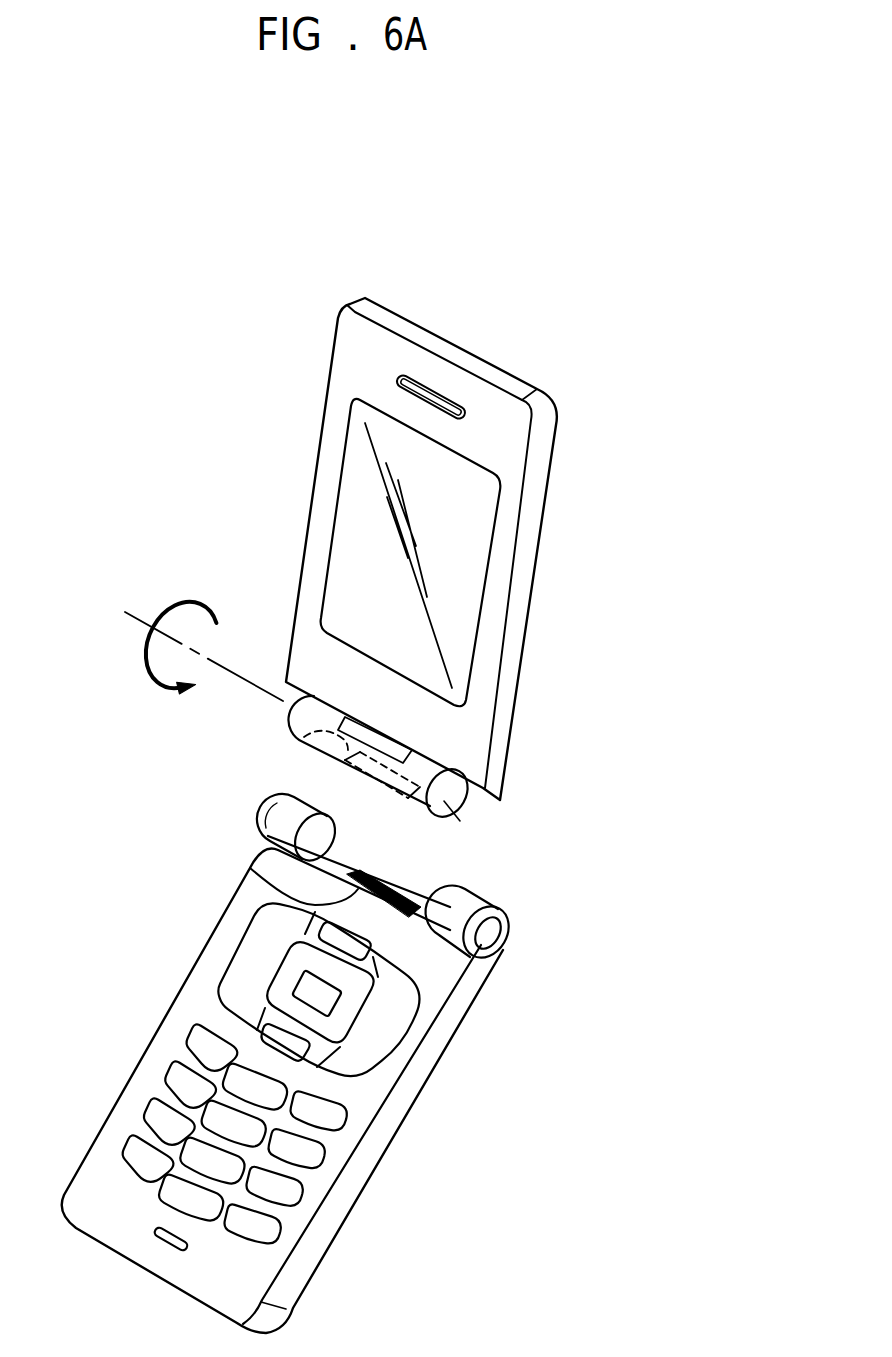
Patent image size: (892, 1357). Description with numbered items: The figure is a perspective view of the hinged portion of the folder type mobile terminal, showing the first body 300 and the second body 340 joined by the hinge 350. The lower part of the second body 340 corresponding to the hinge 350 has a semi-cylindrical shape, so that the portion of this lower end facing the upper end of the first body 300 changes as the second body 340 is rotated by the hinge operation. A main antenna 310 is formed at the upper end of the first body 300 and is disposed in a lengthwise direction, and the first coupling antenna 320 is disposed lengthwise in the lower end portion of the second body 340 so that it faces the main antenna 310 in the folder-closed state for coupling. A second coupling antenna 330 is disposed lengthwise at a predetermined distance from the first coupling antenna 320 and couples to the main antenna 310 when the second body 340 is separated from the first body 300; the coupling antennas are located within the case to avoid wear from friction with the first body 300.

The first body 300 is at (172, 1016).
The main antenna 310 is at (250, 866).
The first coupling antenna 320 is at (300, 742).
The second coupling antenna 330 is at (403, 742).
The second body 340 is at (318, 463).
The hinge 350 is at (308, 800).